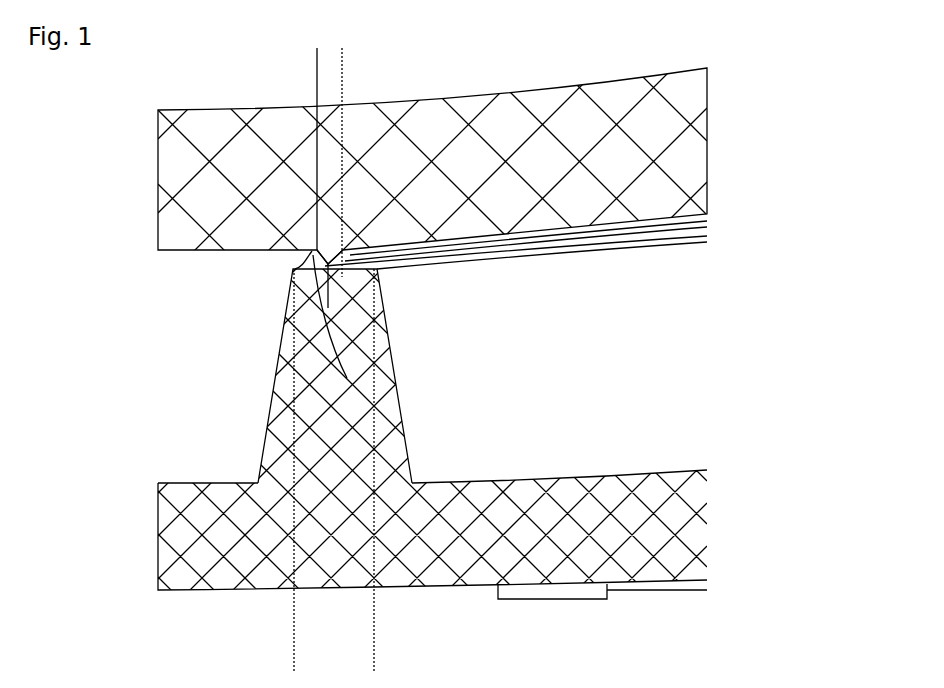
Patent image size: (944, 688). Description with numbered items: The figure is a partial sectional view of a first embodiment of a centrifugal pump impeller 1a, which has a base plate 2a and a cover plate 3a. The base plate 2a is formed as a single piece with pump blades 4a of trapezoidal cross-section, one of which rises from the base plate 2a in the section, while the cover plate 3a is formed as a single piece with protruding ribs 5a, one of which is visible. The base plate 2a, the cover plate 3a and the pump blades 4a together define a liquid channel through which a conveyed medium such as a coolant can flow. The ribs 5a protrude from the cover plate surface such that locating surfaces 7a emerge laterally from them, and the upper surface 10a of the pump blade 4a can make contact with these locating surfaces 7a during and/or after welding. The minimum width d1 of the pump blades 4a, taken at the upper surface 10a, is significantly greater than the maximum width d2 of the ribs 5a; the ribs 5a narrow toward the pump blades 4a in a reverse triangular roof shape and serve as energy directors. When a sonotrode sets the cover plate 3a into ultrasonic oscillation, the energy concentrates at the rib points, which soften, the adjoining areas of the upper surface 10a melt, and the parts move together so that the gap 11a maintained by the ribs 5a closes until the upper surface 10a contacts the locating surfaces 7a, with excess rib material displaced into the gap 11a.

The centrifugal pump impeller 1a is at (795, 265).
The base plate 2a is at (621, 468).
The cover plate 3a is at (242, 104).
The pump blades 4a is at (320, 363).
The ribs 5a is at (375, 357).
The locating surfaces 7a is at (307, 254).
The upper surface 10a is at (347, 262).
The gap 11a is at (400, 412).
The minimum width of the pump blades d1 is at (372, 662).
The maximum width of the ribs d2 is at (277, 64).